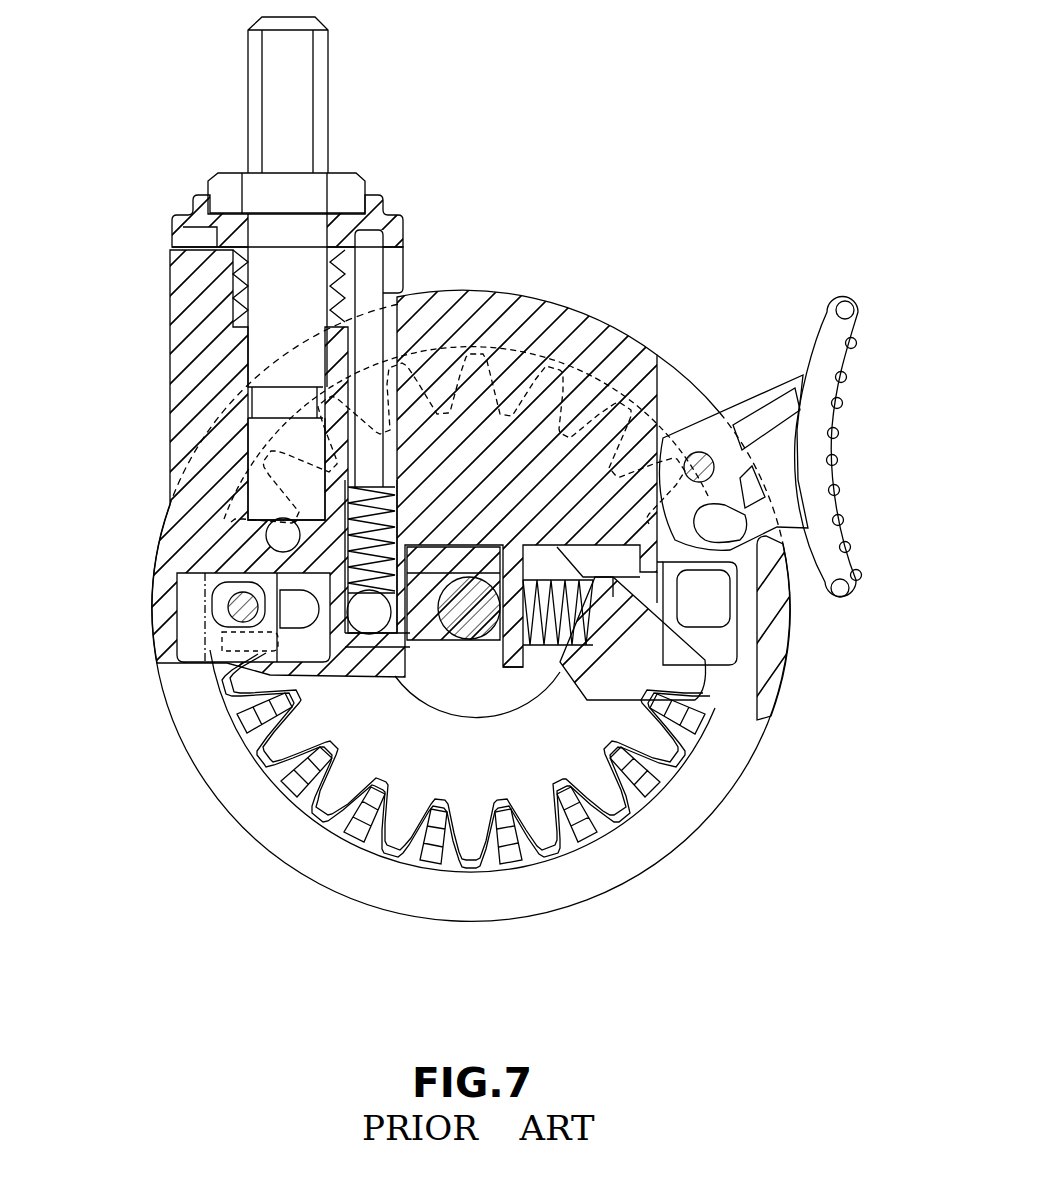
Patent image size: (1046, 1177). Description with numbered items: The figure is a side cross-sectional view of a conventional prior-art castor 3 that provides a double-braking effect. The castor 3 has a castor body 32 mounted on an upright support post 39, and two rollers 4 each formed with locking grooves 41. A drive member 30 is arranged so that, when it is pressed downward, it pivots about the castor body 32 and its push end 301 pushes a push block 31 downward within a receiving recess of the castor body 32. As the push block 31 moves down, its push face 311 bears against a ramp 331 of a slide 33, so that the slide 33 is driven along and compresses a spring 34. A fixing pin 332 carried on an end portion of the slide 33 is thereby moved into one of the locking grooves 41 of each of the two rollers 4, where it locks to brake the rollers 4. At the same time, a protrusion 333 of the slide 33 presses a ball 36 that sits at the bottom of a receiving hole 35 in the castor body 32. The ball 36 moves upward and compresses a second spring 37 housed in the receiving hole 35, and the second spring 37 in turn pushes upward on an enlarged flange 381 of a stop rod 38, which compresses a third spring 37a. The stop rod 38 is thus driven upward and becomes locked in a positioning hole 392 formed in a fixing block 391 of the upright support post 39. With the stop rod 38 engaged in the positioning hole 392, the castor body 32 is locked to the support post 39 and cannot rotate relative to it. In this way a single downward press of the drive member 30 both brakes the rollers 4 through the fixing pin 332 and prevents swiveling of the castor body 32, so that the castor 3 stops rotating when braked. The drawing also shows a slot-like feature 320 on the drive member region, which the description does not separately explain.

The castor 3 is at (718, 919).
The drive member 30 is at (740, 470).
The push end 301 is at (733, 537).
The slot 320 is at (747, 555).
The push block 31 is at (750, 638).
The push face 311 is at (707, 637).
The ramp 331 is at (700, 637).
The castor body 32 is at (607, 337).
The slide 33 is at (366, 676).
The protrusion 333 is at (383, 648).
The spring 34 is at (577, 693).
The receiving hole 35 is at (398, 248).
The ball 36 is at (363, 618).
The second spring 37 is at (366, 616).
The third spring 37a is at (335, 540).
The fixing pin 332 is at (248, 590).
The stop rod 38 is at (372, 278).
The enlarged flange 381 is at (365, 518).
The upright support post 39 is at (283, 246).
The fixing block 391 is at (373, 218).
The positioning hole 392 is at (384, 233).
The rollers 4 is at (438, 903).
The locking grooves 41 is at (395, 833).